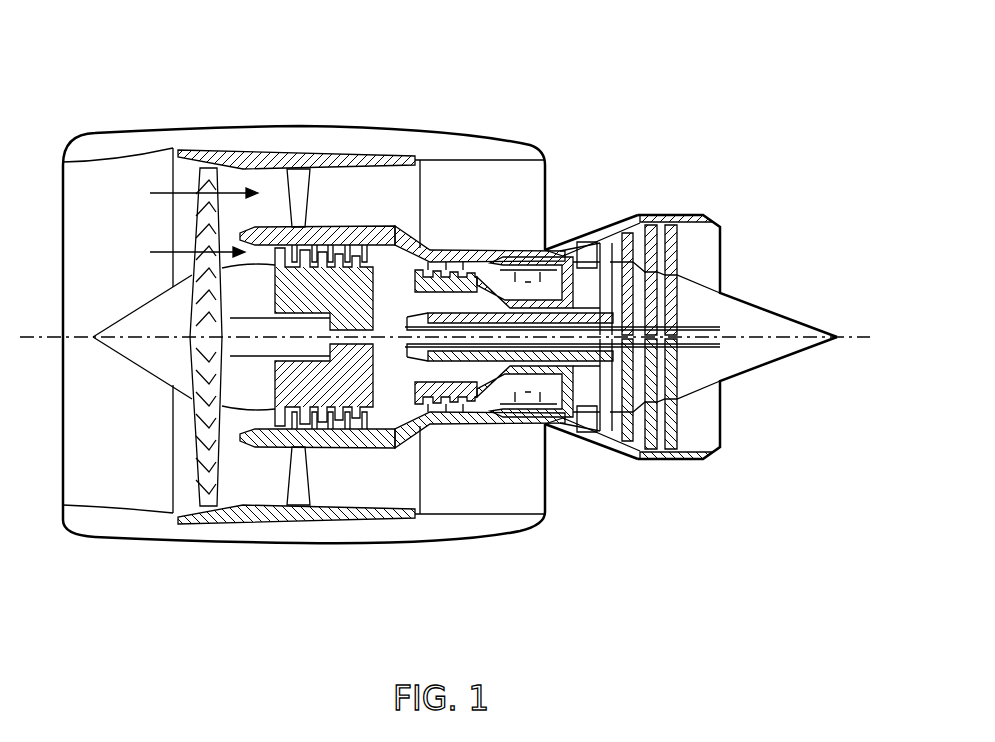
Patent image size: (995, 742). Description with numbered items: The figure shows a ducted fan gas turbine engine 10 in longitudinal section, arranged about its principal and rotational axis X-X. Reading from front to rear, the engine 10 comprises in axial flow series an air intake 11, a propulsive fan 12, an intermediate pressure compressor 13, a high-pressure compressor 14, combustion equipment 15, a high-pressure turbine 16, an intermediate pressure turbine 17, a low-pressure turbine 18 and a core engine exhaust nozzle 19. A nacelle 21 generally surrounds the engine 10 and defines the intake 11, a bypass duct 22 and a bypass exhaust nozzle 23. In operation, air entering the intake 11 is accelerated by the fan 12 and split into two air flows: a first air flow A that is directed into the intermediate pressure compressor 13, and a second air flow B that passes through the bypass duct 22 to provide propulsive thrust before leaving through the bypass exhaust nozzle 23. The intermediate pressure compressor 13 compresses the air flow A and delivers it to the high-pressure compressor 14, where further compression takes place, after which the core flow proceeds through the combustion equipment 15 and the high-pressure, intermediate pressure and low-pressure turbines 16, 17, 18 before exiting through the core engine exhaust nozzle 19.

The ducted fan gas turbine engine 10 is at (445, 311).
The air intake 11 is at (117, 160).
The propulsive fan 12 is at (193, 468).
The intermediate pressure compressor 13 is at (338, 420).
The high-pressure compressor 14 is at (463, 256).
The combustion equipment 15 is at (512, 405).
The high-pressure turbine 16 is at (560, 423).
The intermediate pressure turbine 17 is at (607, 258).
The low-pressure turbine 18 is at (613, 443).
The core engine exhaust nozzle 19 is at (713, 219).
The nacelle 21 is at (337, 533).
The bypass duct 22 is at (498, 204).
The bypass exhaust nozzle 23 is at (547, 157).